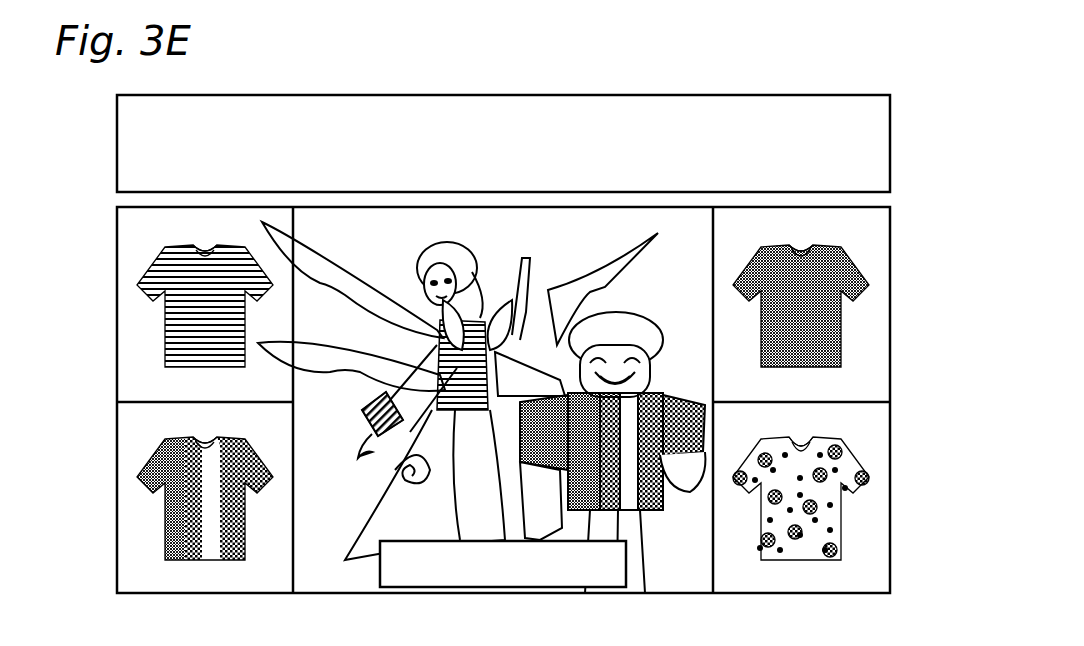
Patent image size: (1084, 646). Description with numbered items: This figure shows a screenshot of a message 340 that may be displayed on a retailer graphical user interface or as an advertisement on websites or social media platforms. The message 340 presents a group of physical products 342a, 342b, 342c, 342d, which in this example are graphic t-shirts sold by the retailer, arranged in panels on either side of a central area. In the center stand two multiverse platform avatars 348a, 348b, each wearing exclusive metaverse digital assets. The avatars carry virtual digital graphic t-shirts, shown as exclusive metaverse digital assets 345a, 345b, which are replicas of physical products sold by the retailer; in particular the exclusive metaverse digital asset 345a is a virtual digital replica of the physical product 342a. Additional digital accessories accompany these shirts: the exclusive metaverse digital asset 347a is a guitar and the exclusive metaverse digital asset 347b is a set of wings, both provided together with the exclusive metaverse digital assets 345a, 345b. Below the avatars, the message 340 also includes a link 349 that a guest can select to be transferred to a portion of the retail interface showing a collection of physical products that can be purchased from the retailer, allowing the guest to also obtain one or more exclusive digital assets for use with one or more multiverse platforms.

The message 340 is at (750, 82).
The physical product 342a is at (150, 275).
The physical product 342b is at (150, 465).
The physical product 342c is at (858, 272).
The physical product 342d is at (858, 465).
The exclusive metaverse digital asset 345a is at (470, 410).
The exclusive metaverse digital asset 345b is at (630, 512).
The exclusive metaverse digital asset 347a is at (525, 270).
The exclusive metaverse digital asset 347b is at (262, 222).
The multiverse platform avatar 348a is at (360, 455).
The multiverse platform avatar 348b is at (683, 478).
The link 349 is at (563, 580).